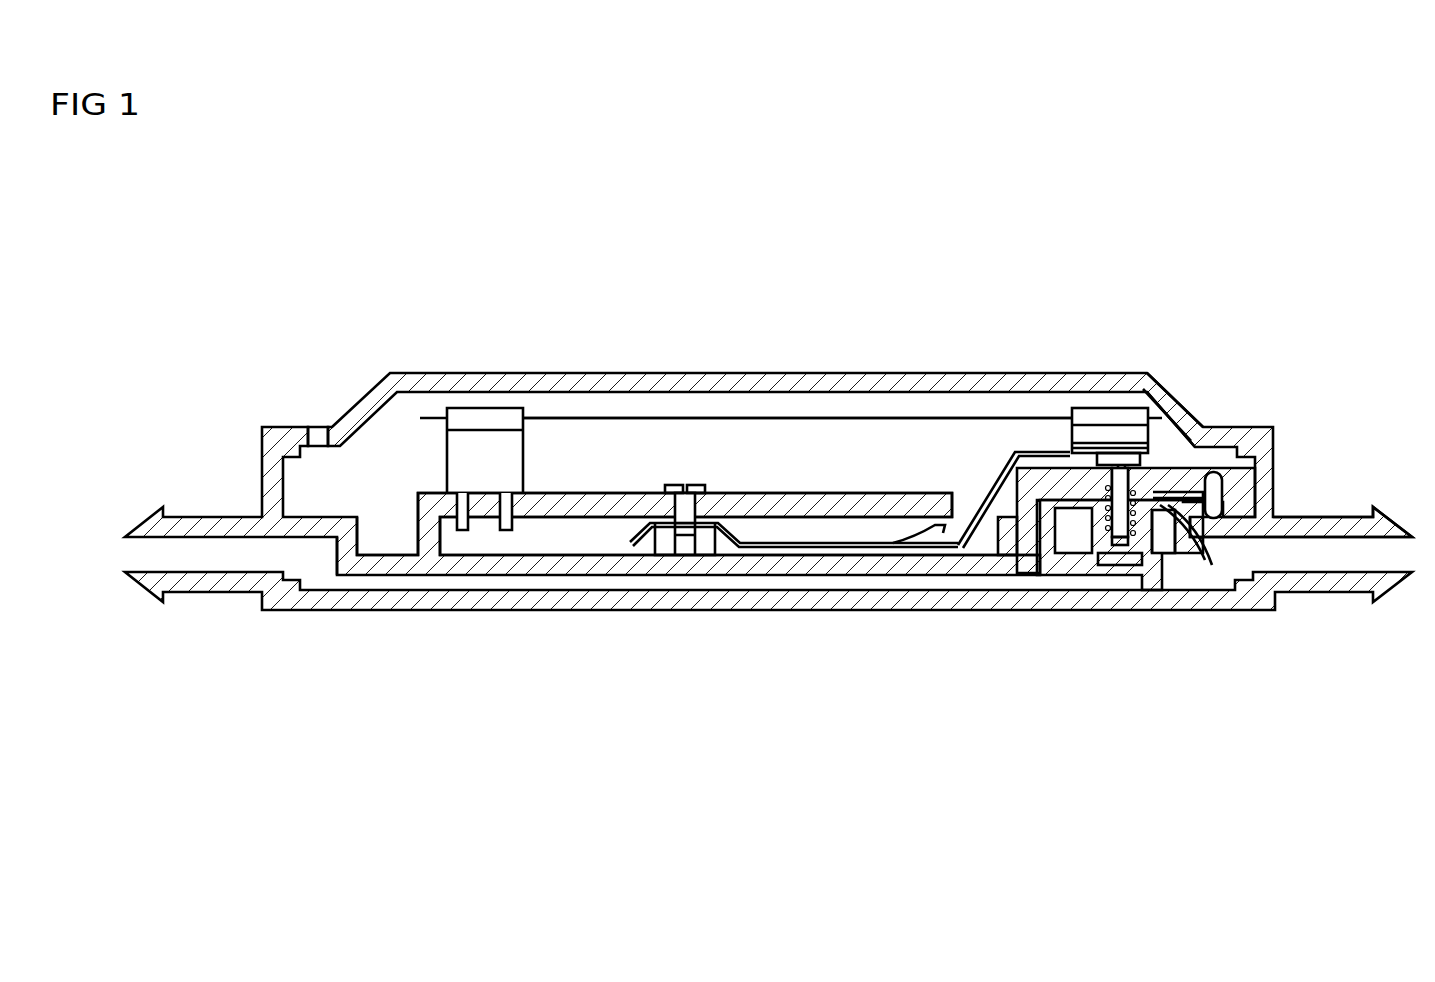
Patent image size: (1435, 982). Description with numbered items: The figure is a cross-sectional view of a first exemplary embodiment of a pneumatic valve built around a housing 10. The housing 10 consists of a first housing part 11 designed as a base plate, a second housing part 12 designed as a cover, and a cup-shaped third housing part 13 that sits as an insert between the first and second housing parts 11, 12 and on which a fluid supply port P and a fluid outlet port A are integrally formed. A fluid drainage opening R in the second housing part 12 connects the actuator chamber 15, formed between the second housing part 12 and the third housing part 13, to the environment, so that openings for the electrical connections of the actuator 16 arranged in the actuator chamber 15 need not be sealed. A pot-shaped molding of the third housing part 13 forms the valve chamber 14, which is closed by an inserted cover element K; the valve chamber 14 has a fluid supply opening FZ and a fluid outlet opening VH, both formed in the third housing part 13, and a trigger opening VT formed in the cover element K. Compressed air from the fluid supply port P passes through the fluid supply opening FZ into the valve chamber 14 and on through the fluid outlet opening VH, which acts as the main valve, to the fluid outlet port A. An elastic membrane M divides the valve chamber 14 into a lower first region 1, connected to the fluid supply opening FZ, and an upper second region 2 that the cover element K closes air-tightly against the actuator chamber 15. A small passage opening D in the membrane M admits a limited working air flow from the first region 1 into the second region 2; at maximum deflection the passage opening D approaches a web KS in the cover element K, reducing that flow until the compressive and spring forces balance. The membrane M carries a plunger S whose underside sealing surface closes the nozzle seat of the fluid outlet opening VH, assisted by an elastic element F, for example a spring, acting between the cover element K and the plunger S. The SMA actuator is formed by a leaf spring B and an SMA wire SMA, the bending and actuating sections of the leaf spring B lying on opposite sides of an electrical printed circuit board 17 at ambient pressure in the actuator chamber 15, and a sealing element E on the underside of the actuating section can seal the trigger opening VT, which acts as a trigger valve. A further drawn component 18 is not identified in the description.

The housing 10 is at (412, 300).
The second housing part 12 is at (785, 373).
The valve chamber 14 is at (1183, 452).
The fluid drainage opening R is at (318, 418).
The fluid outlet port A is at (582, 501).
The third housing part 13 is at (502, 557).
The first housing part 11 is at (731, 612).
The fluid supply port P is at (1301, 541).
The actuator 16 is at (612, 413).
The actuator chamber 15 is at (875, 450).
The SMA wire SMA is at (797, 437).
The electrical printed circuit board 17 is at (818, 503).
The lever strip 18 is at (975, 490).
The leaf spring B is at (987, 491).
The second region 2 is at (1055, 468).
The sealing element E is at (1108, 455).
The trigger opening VT is at (1121, 470).
The first region 1 is at (1072, 537).
The plunger S is at (1097, 543).
The fluid outlet opening VH is at (1115, 560).
The elastic element F is at (1122, 530).
The passage opening D is at (1162, 523).
The fluid supply opening FZ is at (1172, 512).
The elastic membrane M is at (1178, 513).
The cover element K is at (1157, 477).
The web KS is at (1153, 480).